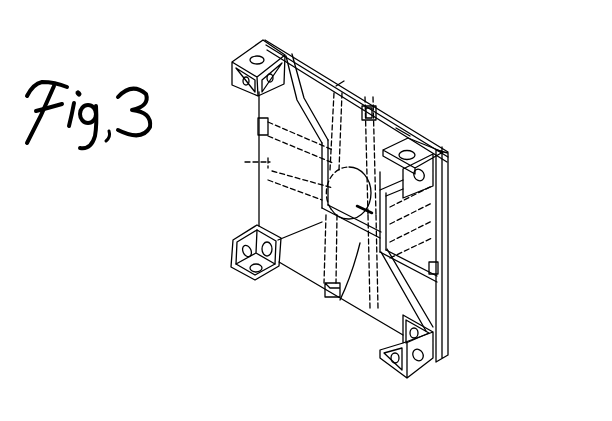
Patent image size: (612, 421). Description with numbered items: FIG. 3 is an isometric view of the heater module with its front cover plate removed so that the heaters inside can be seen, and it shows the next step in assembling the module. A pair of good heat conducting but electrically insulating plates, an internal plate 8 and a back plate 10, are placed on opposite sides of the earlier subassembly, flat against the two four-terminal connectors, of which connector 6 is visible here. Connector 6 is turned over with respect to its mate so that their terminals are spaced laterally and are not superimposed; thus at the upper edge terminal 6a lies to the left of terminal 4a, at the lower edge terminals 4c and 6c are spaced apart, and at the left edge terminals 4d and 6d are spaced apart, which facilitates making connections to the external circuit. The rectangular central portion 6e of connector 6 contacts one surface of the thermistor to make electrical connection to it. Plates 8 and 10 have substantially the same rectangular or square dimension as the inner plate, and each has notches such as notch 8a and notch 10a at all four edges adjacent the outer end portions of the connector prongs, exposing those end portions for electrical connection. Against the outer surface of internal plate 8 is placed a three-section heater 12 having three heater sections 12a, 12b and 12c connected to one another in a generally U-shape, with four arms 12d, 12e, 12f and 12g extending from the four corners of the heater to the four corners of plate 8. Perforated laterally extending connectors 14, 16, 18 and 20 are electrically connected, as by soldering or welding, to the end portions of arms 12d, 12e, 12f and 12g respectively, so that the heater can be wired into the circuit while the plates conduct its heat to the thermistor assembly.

The perforated laterally extending connector 20 is at (245, 45).
The arm of heater 12g is at (298, 76).
The terminal of connector 6a is at (347, 83).
The notch of back plate 10a is at (345, 96).
The terminal of connector 4a is at (387, 110).
The notch of internal plate 8a is at (395, 130).
The perforated laterally extending connector 14 is at (420, 133).
The arm of heater 12d is at (392, 173).
The back plate 10 is at (447, 173).
The internal plate 8 is at (432, 204).
The heater section 12a is at (380, 224).
The arm of heater 12e is at (405, 301).
The perforated laterally extending connector 16 is at (427, 358).
The terminal of connector 6c is at (367, 320).
The heater section 12b is at (343, 245).
The terminal of connector 4c is at (336, 290).
The arm of heater 12f is at (298, 237).
The perforated laterally extending connector 18 is at (243, 283).
The three-section heater 12 is at (313, 211).
The terminal of connector 6d is at (273, 161).
The heater section 12c is at (315, 167).
The terminal of connector 4d is at (258, 124).
The four-terminal connector 6 is at (344, 131).
The rectangular central portion of connector 6e is at (410, 150).